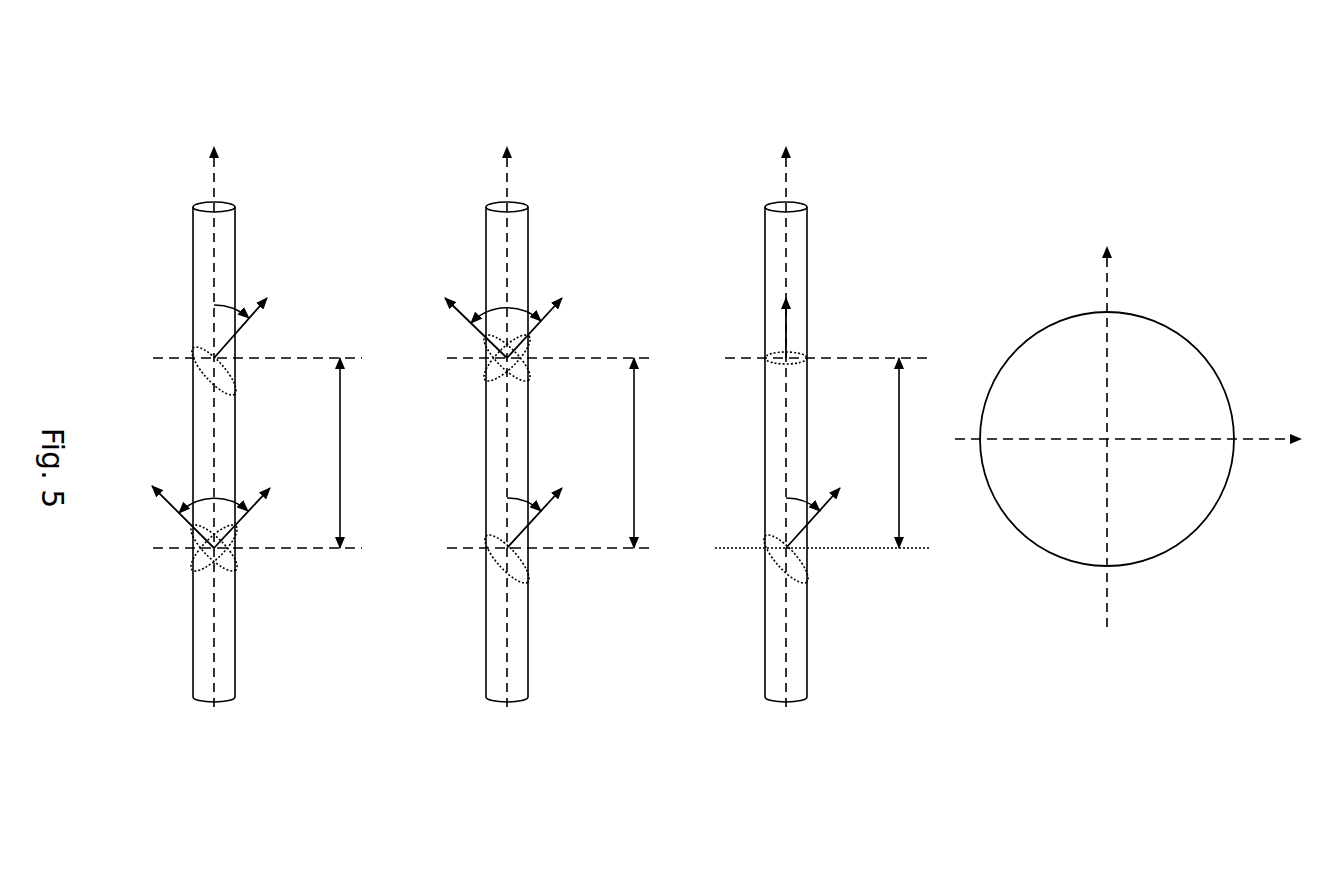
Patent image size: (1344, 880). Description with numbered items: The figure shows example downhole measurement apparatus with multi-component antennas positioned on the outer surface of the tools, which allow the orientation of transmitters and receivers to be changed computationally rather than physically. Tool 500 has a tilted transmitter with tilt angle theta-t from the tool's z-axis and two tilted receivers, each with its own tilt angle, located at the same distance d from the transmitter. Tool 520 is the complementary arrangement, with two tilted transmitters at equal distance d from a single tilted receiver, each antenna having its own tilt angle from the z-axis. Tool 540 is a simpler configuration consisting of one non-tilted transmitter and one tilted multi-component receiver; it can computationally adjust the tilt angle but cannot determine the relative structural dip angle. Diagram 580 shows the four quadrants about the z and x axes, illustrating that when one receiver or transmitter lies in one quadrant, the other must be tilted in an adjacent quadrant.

The tool 500 is at (153, 238).
The tool 520 is at (463, 238).
The tool 540 is at (741, 238).
The diagram 580 is at (1191, 240).